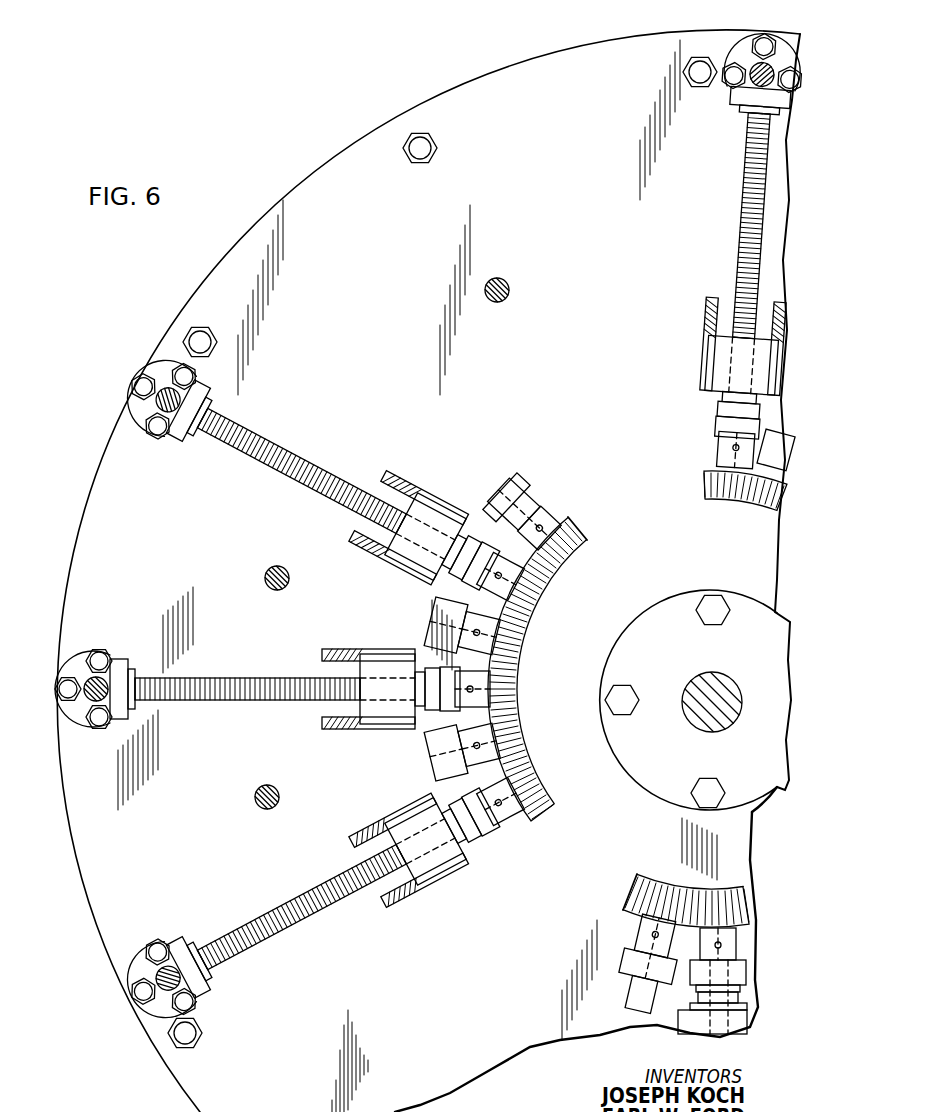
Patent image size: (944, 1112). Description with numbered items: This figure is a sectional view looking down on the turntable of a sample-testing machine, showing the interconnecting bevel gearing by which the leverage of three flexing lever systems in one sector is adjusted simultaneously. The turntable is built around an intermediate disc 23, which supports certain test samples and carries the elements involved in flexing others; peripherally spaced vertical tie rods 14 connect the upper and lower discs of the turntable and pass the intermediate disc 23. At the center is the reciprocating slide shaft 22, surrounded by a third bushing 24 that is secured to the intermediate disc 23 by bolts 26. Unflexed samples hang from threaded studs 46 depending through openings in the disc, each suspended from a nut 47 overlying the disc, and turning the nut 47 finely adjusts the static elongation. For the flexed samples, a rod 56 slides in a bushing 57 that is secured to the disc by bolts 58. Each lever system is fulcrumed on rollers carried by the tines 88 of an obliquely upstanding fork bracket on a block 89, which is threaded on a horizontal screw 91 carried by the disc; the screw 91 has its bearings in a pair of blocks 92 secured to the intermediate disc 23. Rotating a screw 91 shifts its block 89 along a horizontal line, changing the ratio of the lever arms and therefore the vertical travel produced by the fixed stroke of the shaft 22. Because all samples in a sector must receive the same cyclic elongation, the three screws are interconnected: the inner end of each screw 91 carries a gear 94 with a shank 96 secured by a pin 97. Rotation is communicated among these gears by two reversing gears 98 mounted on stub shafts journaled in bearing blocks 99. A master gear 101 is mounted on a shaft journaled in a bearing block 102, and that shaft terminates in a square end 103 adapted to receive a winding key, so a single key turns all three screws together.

The tie rod 14 is at (509, 291).
The shaft 22 is at (725, 717).
The intermediate disc 23 is at (220, 283).
The third bushing 24 is at (665, 790).
The bolt 26 is at (722, 622).
The threaded stud 46 is at (431, 153).
The nut 47 is at (432, 143).
The rod 56 is at (186, 382).
The bushing 57 is at (150, 390).
The bolt 58 is at (160, 430).
The tine 88 is at (400, 480).
The block 89 is at (425, 510).
The horizontal screw 91 is at (325, 470).
The block 92 is at (192, 430).
The gear 94 is at (540, 596).
The shank 96 is at (520, 572).
The pin 97 is at (530, 608).
The reversing gear 98 is at (516, 640).
The bearing block 99 is at (440, 630).
The master gear 101 is at (577, 535).
The bearing block 102 is at (537, 505).
The square end 103 is at (513, 492).